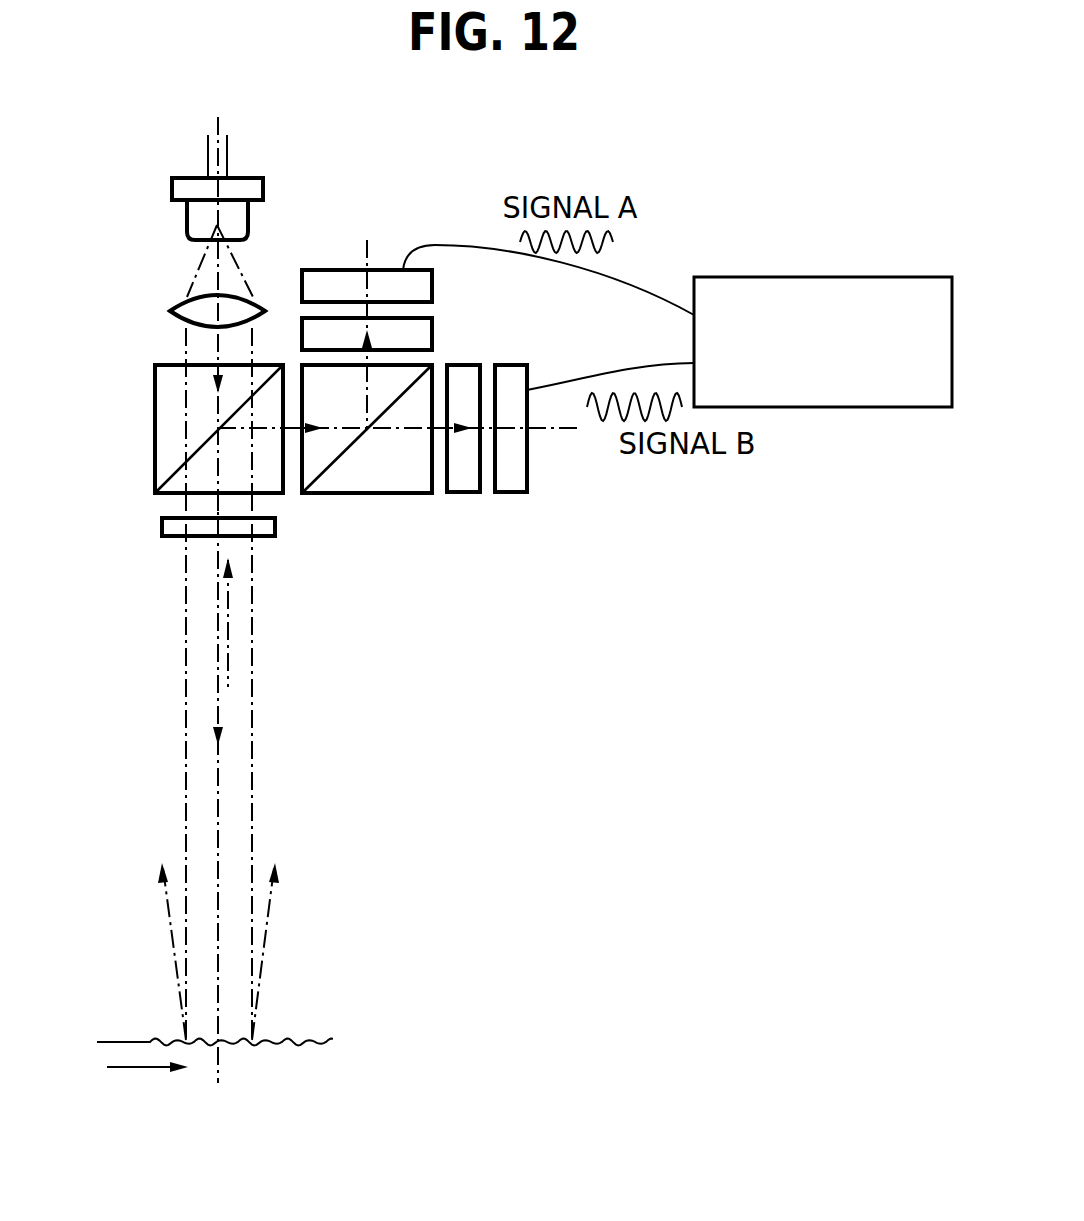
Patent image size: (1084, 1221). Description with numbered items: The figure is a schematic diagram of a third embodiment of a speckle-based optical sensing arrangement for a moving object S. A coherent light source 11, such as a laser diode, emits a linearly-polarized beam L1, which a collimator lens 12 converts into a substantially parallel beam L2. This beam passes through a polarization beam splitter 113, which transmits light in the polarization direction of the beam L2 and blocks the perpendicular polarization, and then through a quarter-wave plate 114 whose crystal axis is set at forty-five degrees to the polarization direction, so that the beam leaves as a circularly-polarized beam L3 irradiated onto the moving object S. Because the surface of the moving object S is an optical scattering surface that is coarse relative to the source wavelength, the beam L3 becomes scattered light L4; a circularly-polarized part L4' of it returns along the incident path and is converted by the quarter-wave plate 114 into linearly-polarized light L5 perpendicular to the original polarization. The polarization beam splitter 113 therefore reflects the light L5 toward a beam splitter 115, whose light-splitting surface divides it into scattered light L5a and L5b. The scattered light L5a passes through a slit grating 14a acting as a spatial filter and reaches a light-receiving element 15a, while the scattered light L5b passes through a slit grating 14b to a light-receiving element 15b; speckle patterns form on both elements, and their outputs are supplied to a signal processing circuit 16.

The coherent light source 11 is at (172, 189).
The collimator lens 12 is at (178, 310).
The polarization beam splitter 113 is at (160, 428).
The λ/4 wave plate 114 is at (168, 527).
The beam splitter 115 is at (343, 480).
The slit grating 14a is at (417, 334).
The slit grating 14b is at (465, 480).
The light-receiving element 15a is at (383, 278).
The light-receiving element 15b is at (527, 477).
The signal processing circuit 16 is at (831, 277).
The beam L1 is at (197, 270).
The substantially parallel beam L2 is at (187, 341).
The circularly-polarized beam L3 is at (186, 672).
The scattered light L4 is at (291, 766).
The circularly-polarized beam L4' is at (272, 622).
The linearly-polarized light L5 is at (217, 507).
The scattered light L5a is at (366, 397).
The scattered light L5b is at (405, 430).
The moving object S is at (308, 1040).